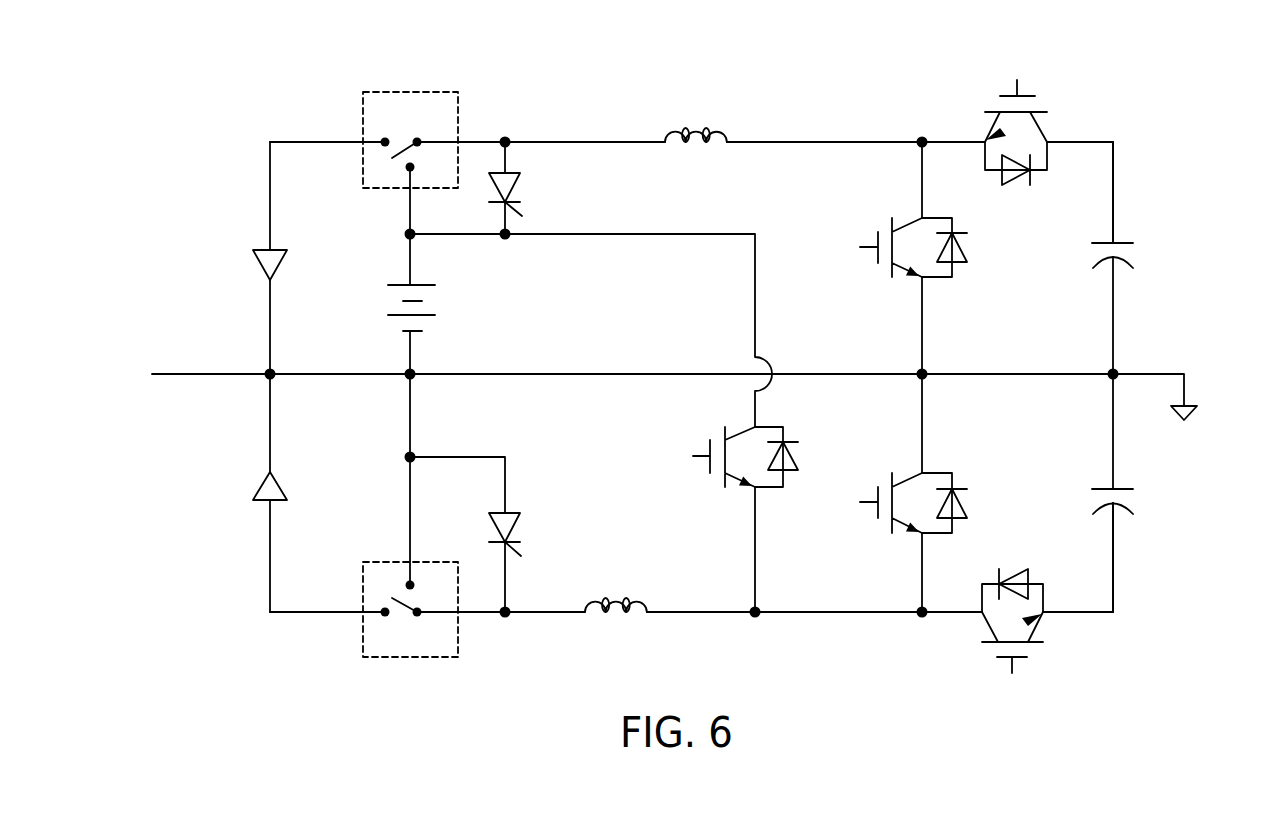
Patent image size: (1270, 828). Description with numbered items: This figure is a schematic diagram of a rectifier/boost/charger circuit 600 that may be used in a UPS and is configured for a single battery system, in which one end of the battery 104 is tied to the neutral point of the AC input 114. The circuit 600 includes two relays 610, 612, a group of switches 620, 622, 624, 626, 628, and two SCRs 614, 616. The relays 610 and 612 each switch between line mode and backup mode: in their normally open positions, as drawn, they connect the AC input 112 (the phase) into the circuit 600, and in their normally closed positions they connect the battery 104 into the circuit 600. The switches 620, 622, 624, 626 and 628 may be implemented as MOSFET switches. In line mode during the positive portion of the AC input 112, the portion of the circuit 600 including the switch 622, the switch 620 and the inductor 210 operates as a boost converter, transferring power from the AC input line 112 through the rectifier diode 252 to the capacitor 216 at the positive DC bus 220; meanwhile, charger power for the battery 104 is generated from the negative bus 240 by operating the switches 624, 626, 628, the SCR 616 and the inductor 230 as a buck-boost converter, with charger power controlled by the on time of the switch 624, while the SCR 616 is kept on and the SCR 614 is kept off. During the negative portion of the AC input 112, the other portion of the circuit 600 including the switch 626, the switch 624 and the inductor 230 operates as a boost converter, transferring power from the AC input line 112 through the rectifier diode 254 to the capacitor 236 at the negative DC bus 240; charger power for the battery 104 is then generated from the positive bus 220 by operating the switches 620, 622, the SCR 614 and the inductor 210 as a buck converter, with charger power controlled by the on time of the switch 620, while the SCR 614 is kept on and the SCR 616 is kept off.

The rectifier/boost/charger circuit 600 is at (878, 86).
The relay 610 is at (448, 92).
The relay 612 is at (448, 657).
The SCR 614 is at (513, 174).
The SCR 616 is at (513, 512).
The battery 104 is at (427, 285).
The rectifier diode 252 is at (268, 248).
The rectifier diode 254 is at (267, 503).
The AC input 112 is at (210, 378).
The neutral point of the AC input 114 is at (1135, 372).
The inductor 210 is at (714, 117).
The inductor 230 is at (622, 614).
The positive DC bus 220 is at (1113, 167).
The capacitor 216 is at (1122, 260).
The capacitor 236 is at (1122, 503).
The negative DC bus 240 is at (1113, 583).
The switch 620 is at (1045, 110).
The switch 622 is at (910, 222).
The switch 624 is at (985, 646).
The switch 626 is at (890, 532).
The switch 628 is at (742, 430).